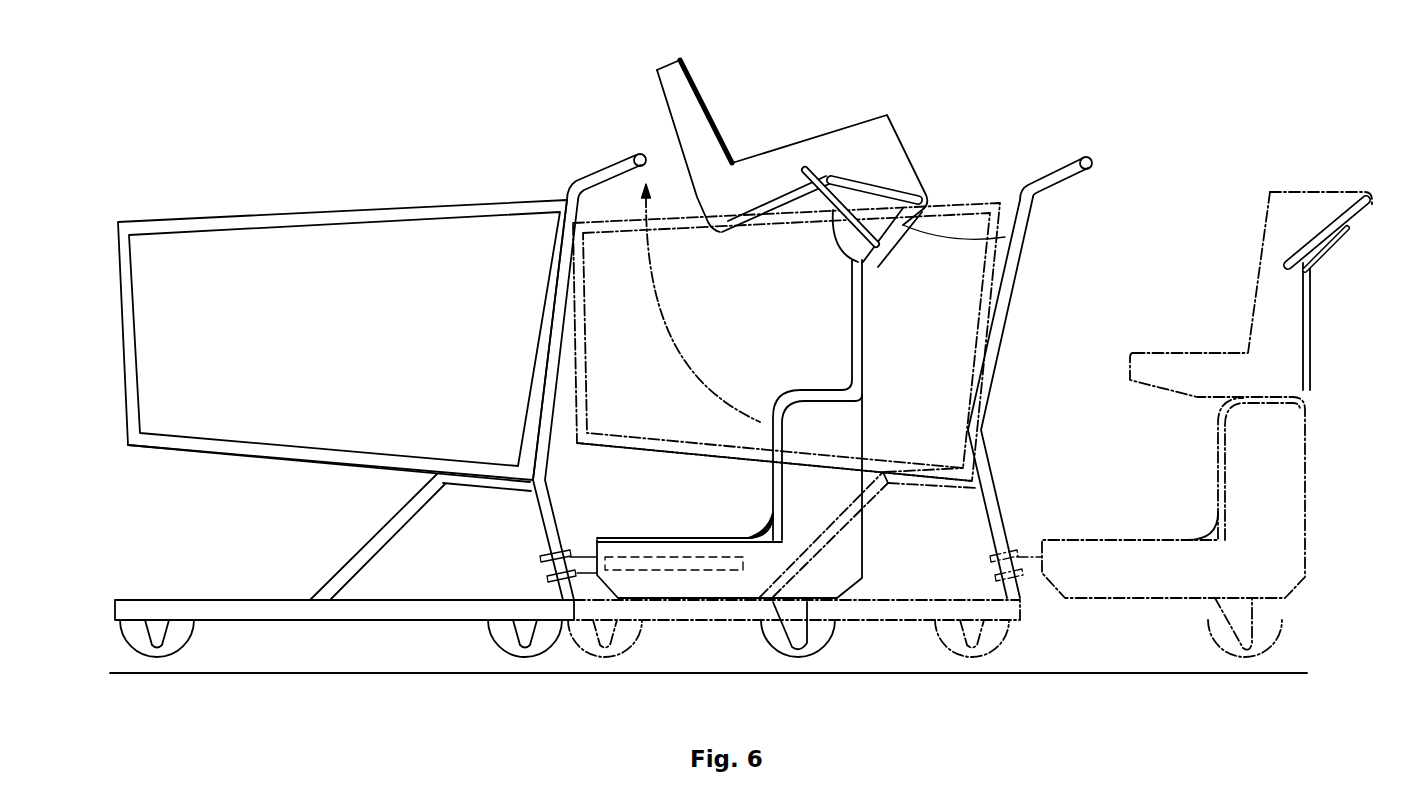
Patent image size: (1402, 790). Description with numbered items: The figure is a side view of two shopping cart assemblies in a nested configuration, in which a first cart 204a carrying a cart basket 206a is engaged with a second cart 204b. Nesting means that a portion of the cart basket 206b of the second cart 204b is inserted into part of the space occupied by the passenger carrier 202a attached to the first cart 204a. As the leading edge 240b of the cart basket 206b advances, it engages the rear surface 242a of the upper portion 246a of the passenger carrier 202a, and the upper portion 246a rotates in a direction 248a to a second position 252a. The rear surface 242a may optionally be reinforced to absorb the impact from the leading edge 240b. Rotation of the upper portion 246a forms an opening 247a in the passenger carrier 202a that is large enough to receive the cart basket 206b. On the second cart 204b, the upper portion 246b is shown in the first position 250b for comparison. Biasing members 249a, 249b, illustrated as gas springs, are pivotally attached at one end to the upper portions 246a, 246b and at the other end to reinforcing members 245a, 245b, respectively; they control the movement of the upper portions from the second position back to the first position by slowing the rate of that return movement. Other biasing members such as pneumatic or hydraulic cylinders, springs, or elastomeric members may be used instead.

The passenger carrier 202a is at (849, 329).
The first cart 204a is at (324, 212).
The second cart 204b is at (978, 203).
The cart basket 206a is at (290, 458).
The cart basket 206b is at (657, 449).
The leading edge 240b is at (571, 199).
The rear surface 242a is at (783, 213).
The reinforcing member 245a is at (1005, 237).
The reinforcing member 245b is at (1376, 216).
The upper portion 246a is at (831, 163).
The upper portion 246b is at (1258, 313).
The opening 247a is at (866, 326).
The direction 248a is at (680, 346).
The biasing member 249a is at (868, 258).
The biasing member 249b is at (1327, 247).
The first position 250b is at (1214, 366).
The second position 252a is at (703, 80).